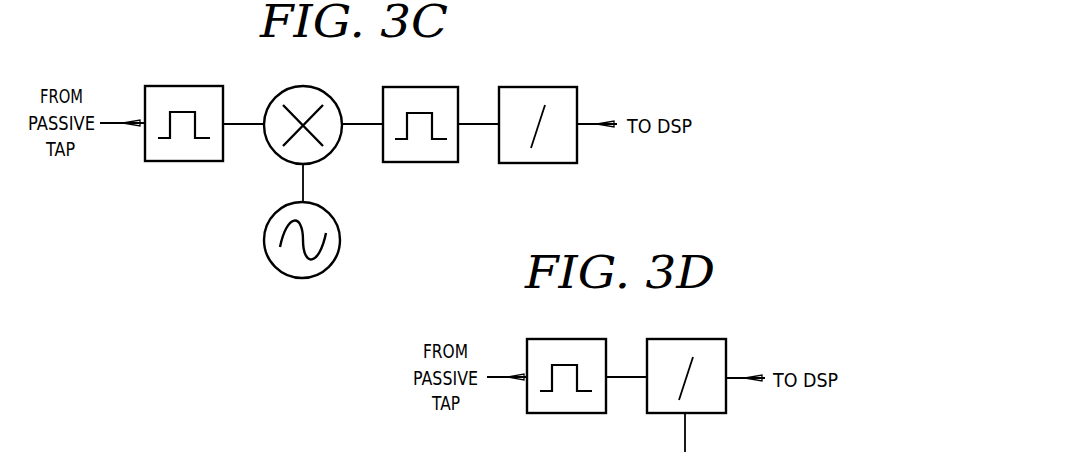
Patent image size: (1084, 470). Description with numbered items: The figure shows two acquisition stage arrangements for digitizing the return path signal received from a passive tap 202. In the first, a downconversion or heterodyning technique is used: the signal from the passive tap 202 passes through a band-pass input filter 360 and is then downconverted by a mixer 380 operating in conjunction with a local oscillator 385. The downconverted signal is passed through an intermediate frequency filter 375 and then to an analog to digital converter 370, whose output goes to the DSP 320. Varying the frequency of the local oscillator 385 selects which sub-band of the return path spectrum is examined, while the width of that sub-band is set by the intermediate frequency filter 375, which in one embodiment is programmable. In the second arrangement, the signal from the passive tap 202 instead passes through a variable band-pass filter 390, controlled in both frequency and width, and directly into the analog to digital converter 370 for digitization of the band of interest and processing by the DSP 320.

In FIG. 3C, the passive tap 202 is at (112, 128).
In FIG. 3D, the passive tap 202 is at (497, 383).
In FIG. 3C, the band-pass input filter 360 is at (180, 163).
In FIG. 3C, the mixer 380 is at (273, 150).
In FIG. 3C, the local oscillator 385 is at (290, 278).
In FIG. 3C, the intermediate frequency filter 375 is at (418, 164).
In FIG. 3C, the analog to digital converter 370 is at (516, 164).
In FIG. 3D, the analog to digital converter 370 is at (661, 415).
In FIG. 3C, the DSP 320 is at (585, 126).
In FIG. 3D, the DSP 320 is at (733, 379).
In FIG. 3D, the variable band-pass filter 390 is at (561, 415).